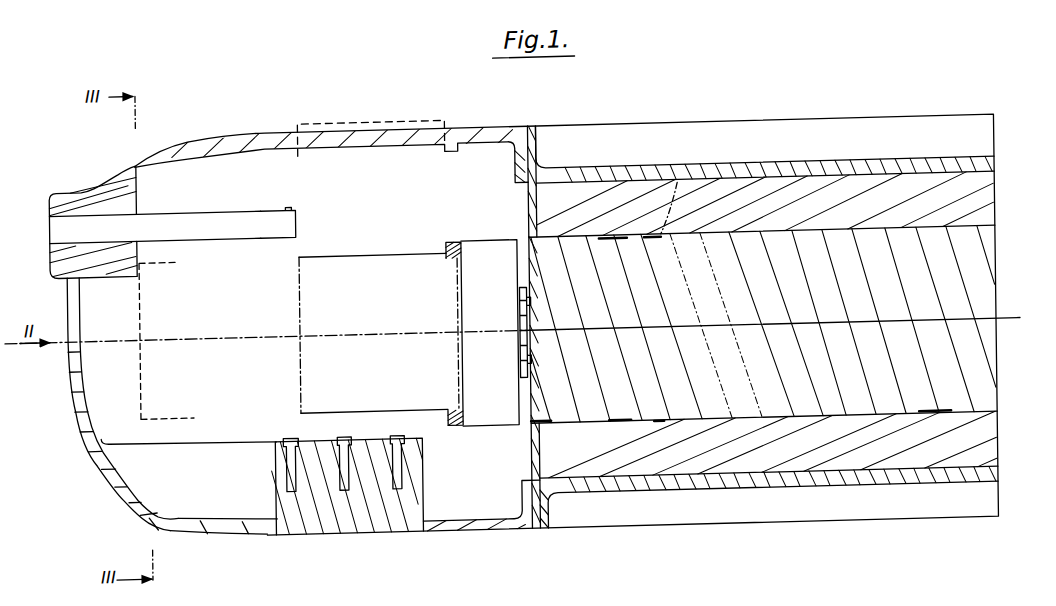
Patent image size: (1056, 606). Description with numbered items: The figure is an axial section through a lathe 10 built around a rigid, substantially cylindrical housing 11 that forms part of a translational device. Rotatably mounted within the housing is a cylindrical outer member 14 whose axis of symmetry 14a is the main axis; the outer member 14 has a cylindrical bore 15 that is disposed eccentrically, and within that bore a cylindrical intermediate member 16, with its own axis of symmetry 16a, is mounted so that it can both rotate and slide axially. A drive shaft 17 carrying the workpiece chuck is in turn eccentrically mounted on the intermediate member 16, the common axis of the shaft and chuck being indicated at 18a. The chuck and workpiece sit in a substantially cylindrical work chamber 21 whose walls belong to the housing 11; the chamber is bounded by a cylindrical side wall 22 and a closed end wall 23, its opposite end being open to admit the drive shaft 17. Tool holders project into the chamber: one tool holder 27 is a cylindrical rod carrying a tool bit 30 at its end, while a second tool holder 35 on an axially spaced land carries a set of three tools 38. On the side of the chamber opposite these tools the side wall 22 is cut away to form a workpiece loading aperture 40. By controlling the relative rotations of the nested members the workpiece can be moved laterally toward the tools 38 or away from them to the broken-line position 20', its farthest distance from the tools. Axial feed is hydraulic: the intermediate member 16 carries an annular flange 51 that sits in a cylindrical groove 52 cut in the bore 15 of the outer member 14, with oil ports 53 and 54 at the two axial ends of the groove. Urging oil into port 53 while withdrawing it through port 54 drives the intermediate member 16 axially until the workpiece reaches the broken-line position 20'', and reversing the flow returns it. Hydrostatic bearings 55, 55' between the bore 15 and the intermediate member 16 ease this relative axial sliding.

The lathe 10 is at (429, 531).
The housing 11 is at (598, 514).
The outer member 14 is at (978, 207).
The axis of symmetry of the outer member 14a is at (953, 330).
The cylindrical bore 15 is at (592, 420).
The intermediate member 16 is at (980, 277).
The axis of symmetry of the intermediate member 16a is at (1023, 396).
The drive shaft 17 is at (530, 345).
The axis of symmetry of the shaft and chuck 18a is at (320, 330).
The broken-line workpiece position 20' is at (371, 118).
The broken-line workpiece position 20'' is at (121, 293).
The work chamber 21 is at (357, 336).
The cylindrical side wall 22 is at (247, 529).
The closed end wall 23 is at (68, 375).
The tool holder 27 is at (167, 206).
The tool bit 30 is at (297, 203).
The tool holder 35 is at (347, 486).
The tools 38 is at (341, 432).
The workpiece loading aperture 40 is at (341, 127).
The annular flange 51 is at (817, 232).
The cylindrical groove 52 is at (733, 238).
The oil inlet port 53 is at (847, 233).
The oil outlet port 54 is at (679, 186).
The hydrostatic bearings 55 is at (770, 322).
The flange ring 55' is at (781, 321).